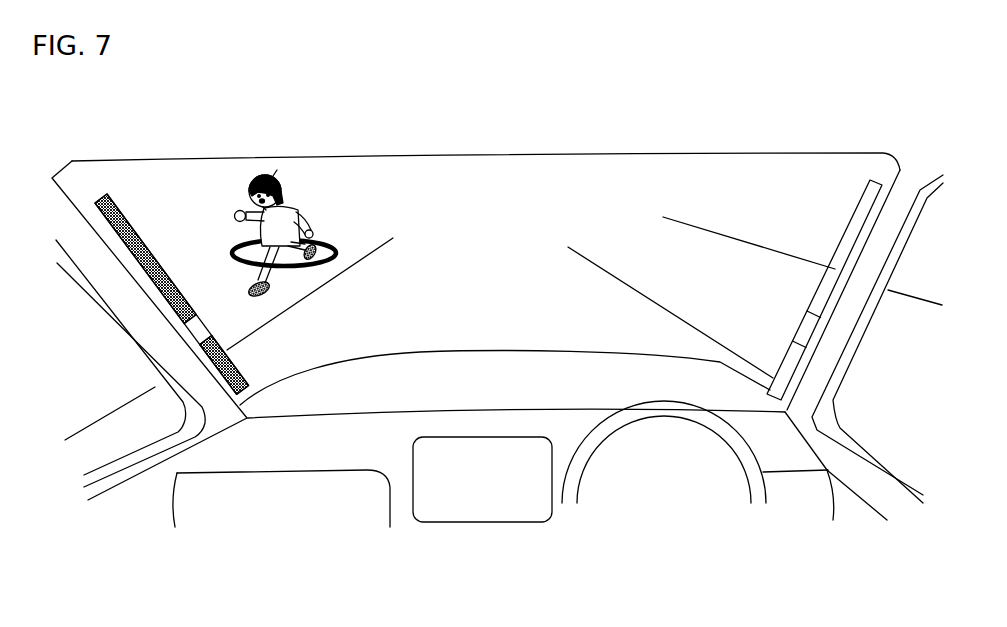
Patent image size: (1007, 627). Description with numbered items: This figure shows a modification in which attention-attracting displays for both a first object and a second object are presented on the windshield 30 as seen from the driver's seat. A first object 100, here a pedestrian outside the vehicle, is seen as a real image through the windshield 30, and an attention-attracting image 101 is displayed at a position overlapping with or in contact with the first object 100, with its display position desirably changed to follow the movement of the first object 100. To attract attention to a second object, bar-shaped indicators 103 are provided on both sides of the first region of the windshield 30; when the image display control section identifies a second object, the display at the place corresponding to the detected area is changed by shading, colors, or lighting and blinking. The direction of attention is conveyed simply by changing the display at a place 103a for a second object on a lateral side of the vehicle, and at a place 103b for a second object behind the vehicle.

The windshield 30 is at (503, 307).
The first object 100 is at (272, 175).
The attention-attracting image 101 is at (330, 243).
The bar-shaped indicator 103 is at (212, 238).
The place for lateral second object 103a is at (148, 257).
The place for rearward second object 103b is at (233, 369).